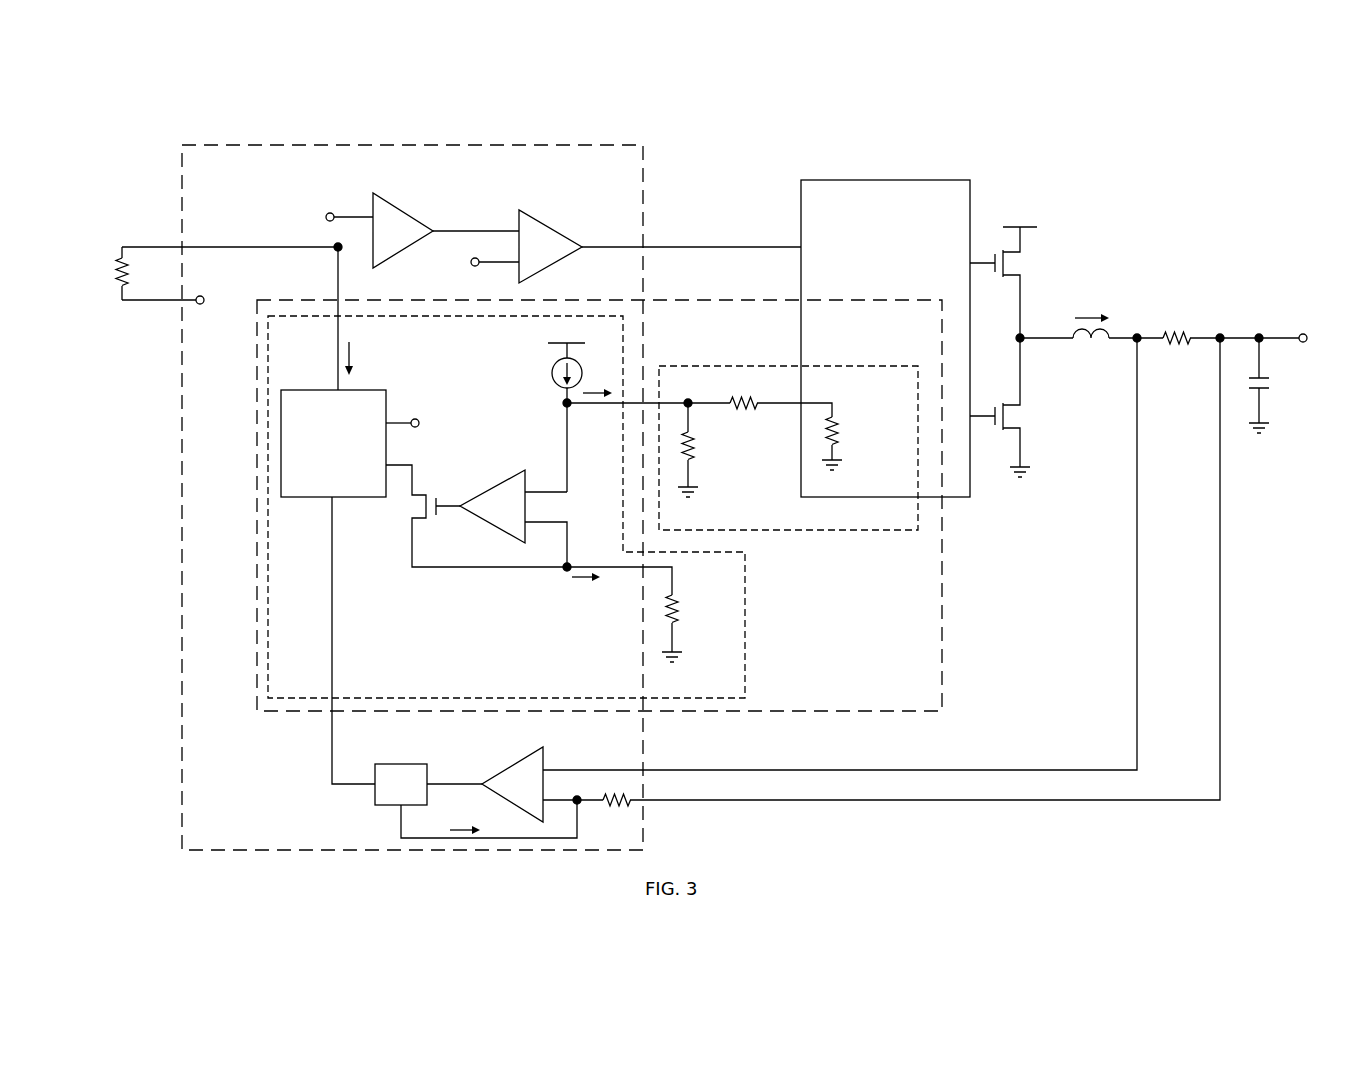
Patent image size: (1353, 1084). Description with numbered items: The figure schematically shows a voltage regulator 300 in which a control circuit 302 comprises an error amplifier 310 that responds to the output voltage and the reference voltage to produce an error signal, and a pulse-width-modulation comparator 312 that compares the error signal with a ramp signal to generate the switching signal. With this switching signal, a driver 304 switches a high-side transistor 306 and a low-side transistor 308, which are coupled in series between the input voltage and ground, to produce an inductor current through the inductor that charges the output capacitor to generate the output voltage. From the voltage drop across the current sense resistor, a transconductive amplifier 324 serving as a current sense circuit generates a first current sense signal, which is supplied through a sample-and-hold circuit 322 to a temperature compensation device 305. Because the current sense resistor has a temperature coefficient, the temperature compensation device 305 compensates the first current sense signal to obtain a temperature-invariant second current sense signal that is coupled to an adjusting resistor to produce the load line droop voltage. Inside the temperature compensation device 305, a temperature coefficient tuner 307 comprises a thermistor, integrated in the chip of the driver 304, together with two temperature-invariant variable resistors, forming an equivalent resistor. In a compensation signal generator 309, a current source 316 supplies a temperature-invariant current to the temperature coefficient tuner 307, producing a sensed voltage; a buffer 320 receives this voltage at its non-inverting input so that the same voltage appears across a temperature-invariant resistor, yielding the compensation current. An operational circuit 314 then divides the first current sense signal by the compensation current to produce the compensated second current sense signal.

The voltage regulator 300 is at (1158, 199).
The control circuit 302 is at (643, 197).
The driver 304 is at (878, 180).
The temperature compensation device 305 is at (942, 630).
The transistor 306 is at (1030, 264).
The temperature coefficient tuner 307 is at (880, 531).
The transistor 308 is at (1030, 416).
The compensation signal generator 309 is at (745, 627).
The error amplifier 310 is at (408, 210).
The PWM comparator 312 is at (553, 222).
The operational circuit 314 is at (357, 500).
The current source 316 is at (553, 368).
The buffer 320 is at (492, 487).
The sample-and-hold circuit 322 is at (402, 764).
The transconductive amplifier 324 is at (510, 766).